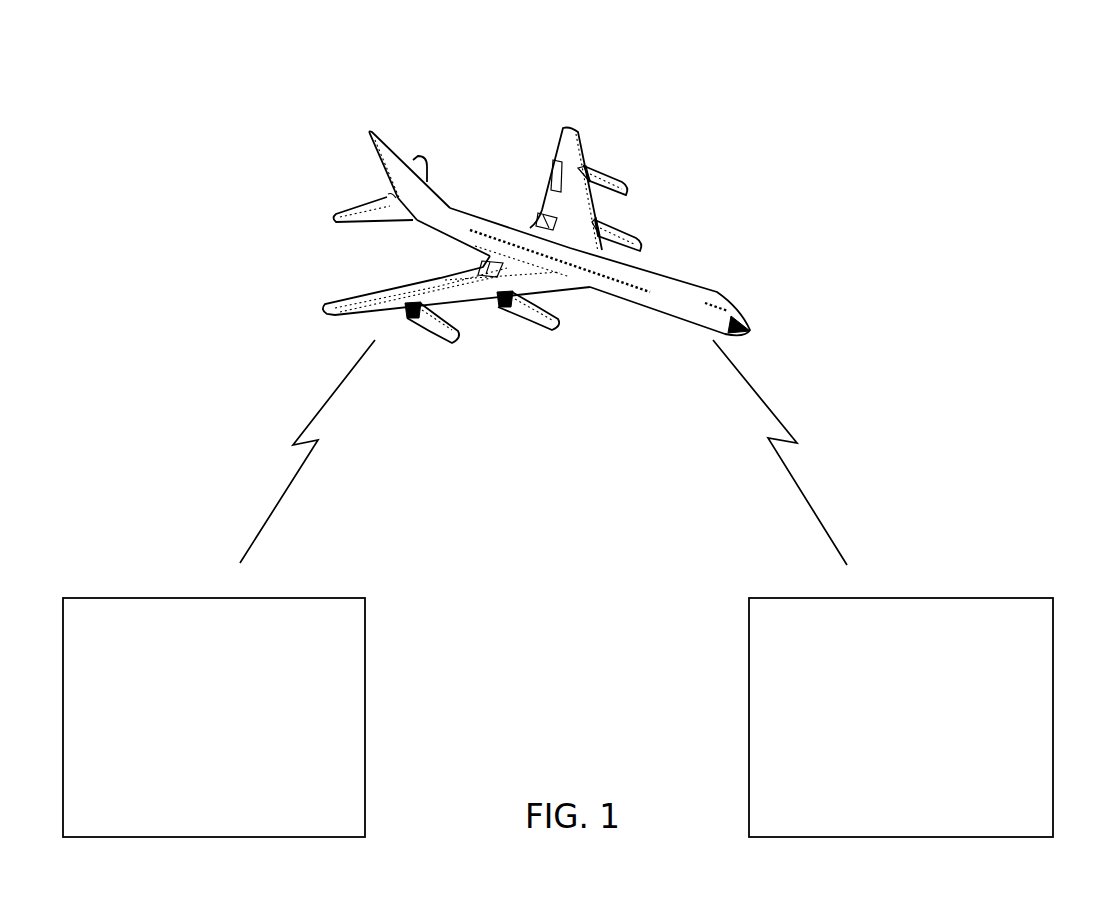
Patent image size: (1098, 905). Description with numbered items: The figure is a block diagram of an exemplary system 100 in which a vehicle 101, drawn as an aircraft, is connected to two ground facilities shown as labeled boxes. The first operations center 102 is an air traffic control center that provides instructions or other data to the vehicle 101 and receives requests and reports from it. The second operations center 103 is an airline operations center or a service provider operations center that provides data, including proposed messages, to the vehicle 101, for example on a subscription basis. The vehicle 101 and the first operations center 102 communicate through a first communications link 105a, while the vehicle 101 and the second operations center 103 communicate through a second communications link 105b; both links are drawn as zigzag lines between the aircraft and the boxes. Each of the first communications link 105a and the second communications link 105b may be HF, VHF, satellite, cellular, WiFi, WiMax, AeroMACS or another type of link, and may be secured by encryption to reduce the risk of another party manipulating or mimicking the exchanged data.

The system 100 is at (868, 106).
The vehicle 101 is at (577, 150).
The first operations center 102 is at (925, 742).
The second operations center 103 is at (237, 742).
The first communications link 105a is at (743, 378).
The second communications link 105b is at (340, 384).